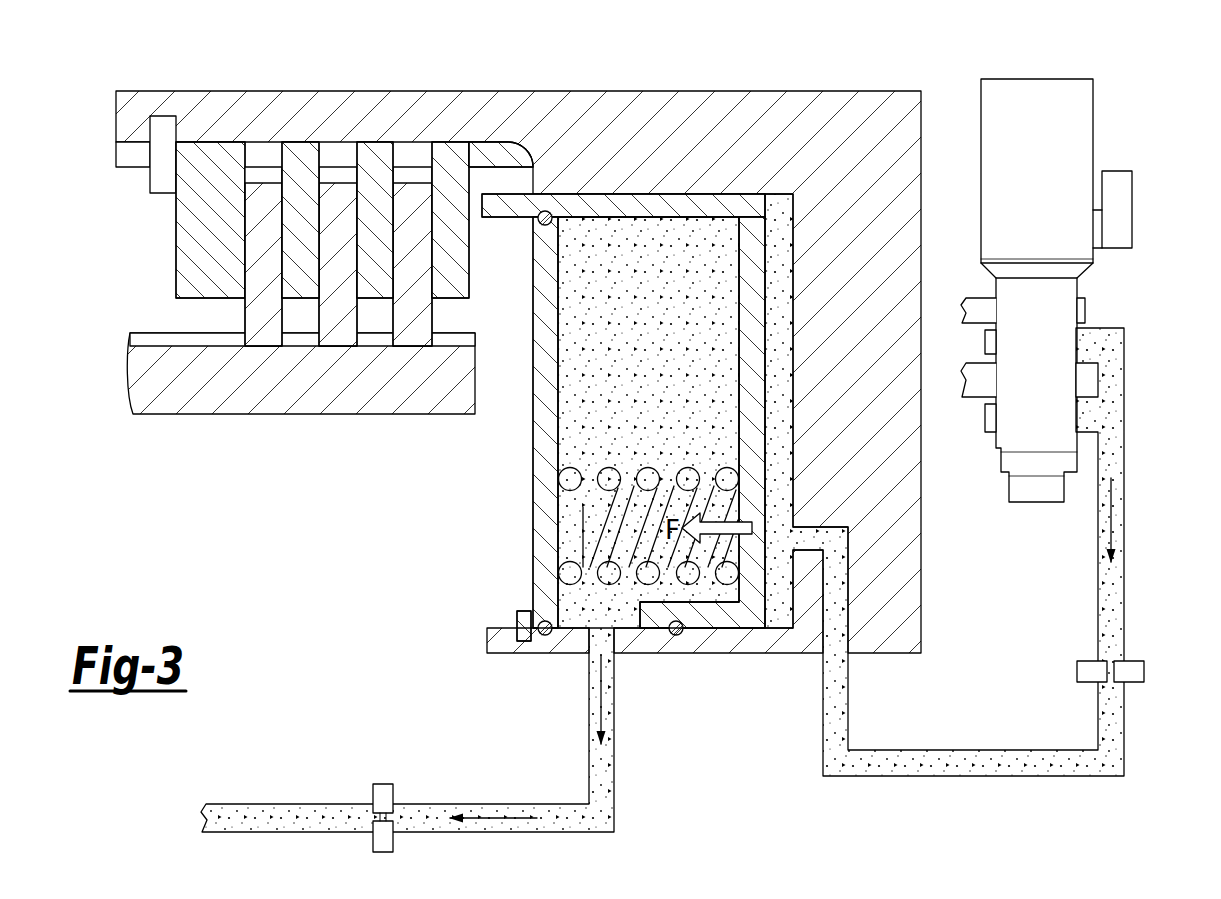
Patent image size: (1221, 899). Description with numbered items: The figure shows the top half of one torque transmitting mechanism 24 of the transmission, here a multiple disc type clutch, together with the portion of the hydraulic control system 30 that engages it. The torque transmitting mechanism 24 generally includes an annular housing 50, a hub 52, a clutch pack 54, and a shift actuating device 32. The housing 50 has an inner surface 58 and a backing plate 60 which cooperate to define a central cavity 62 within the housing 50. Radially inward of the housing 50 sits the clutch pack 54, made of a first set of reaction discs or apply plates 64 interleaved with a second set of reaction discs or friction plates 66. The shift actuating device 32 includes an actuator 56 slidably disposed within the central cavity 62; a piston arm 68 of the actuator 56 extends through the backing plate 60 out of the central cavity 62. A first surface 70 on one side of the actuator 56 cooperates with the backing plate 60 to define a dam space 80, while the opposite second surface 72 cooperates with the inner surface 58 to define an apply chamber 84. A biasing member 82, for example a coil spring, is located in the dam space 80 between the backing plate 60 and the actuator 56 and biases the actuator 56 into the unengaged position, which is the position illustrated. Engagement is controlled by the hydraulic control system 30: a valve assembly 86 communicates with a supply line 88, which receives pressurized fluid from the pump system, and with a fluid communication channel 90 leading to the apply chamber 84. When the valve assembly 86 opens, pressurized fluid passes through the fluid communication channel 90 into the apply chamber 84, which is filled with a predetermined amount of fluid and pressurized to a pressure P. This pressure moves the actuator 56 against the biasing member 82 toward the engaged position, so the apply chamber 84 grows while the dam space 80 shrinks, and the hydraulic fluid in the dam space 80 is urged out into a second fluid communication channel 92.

The torque transmitting mechanism 24 is at (854, 64).
The hydraulic control system 30 is at (700, 487).
The shift actuating device 32 is at (518, 461).
The housing 50 is at (512, 92).
The hub 52 is at (236, 414).
The clutch pack 54 is at (153, 232).
The actuator 56 is at (602, 447).
The inner surface 58 is at (613, 200).
The backing plate 60 is at (533, 517).
The central cavity 62 is at (781, 194).
The apply plates 64 is at (316, 227).
The friction plates 66 is at (272, 287).
The piston arm 68 is at (495, 218).
The first surface 70 is at (739, 310).
The second surface 72 is at (793, 368).
The dam space 80 is at (661, 359).
The biasing member 82 is at (570, 572).
The apply chamber 84 is at (778, 619).
The valve assembly 86 is at (1093, 117).
The supply line 88 is at (972, 398).
The fluid communication channel 90 is at (1124, 600).
The second fluid communication channel 92 is at (613, 752).
The pressure P is at (785, 540).